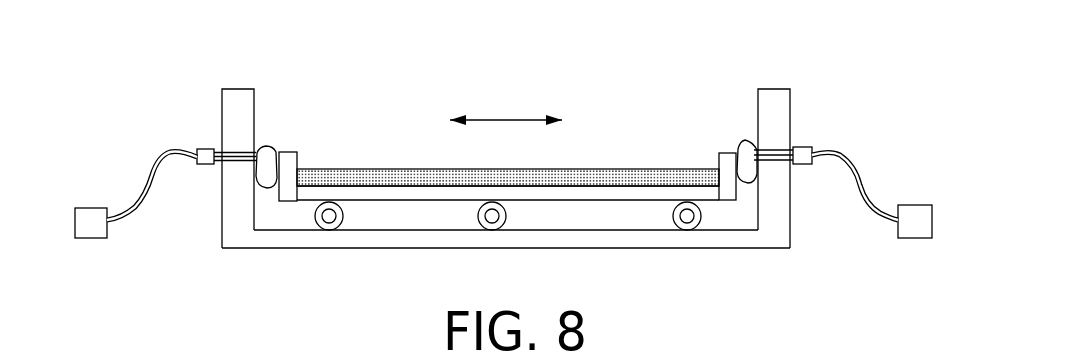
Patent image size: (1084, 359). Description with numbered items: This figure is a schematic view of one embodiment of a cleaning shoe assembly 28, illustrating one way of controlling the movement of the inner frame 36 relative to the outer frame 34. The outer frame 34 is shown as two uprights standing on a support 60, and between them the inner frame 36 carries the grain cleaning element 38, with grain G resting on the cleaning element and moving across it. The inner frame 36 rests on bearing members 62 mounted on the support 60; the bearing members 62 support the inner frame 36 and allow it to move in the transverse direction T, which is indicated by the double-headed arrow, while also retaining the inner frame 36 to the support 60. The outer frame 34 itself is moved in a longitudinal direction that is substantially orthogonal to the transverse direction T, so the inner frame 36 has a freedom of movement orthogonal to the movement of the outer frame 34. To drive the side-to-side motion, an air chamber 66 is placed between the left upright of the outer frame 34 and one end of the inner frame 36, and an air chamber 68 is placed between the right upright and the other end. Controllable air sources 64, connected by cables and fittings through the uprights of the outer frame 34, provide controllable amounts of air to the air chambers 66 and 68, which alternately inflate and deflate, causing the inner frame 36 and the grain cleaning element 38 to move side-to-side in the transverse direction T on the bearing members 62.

The cleaning shoe assembly 28 is at (786, 38).
The outer frame 34 is at (790, 117).
The inner frame 36 is at (290, 152).
The grain cleaning element 38 is at (580, 200).
The support 60 is at (240, 248).
The bearing members 62 is at (478, 217).
The controllable air sources 64 is at (92, 208).
The air chamber 66 is at (267, 146).
The air chamber 68 is at (742, 140).
The glass sheet G is at (660, 169).
The transverse direction T is at (513, 120).